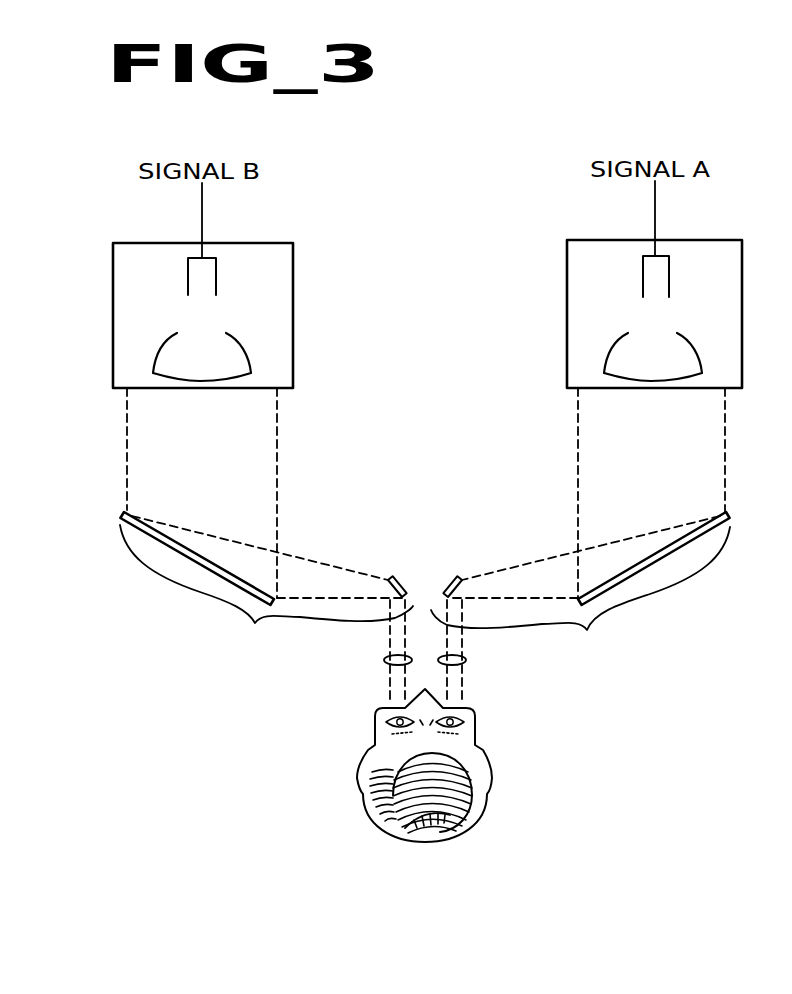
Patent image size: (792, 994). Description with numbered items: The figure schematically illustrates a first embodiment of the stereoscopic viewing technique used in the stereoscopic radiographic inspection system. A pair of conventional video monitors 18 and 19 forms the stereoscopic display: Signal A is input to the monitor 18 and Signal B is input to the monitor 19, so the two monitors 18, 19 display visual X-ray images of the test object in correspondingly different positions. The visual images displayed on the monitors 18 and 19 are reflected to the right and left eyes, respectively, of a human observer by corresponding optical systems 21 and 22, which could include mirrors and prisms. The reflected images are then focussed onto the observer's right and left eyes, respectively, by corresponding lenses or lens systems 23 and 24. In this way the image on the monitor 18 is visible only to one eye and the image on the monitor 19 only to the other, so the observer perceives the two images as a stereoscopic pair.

The video monitor 18 is at (605, 348).
The video monitor 19 is at (250, 356).
The optical system 21 is at (580, 589).
The optical system 22 is at (266, 586).
The lens 23 is at (466, 663).
The lens 24 is at (385, 663).